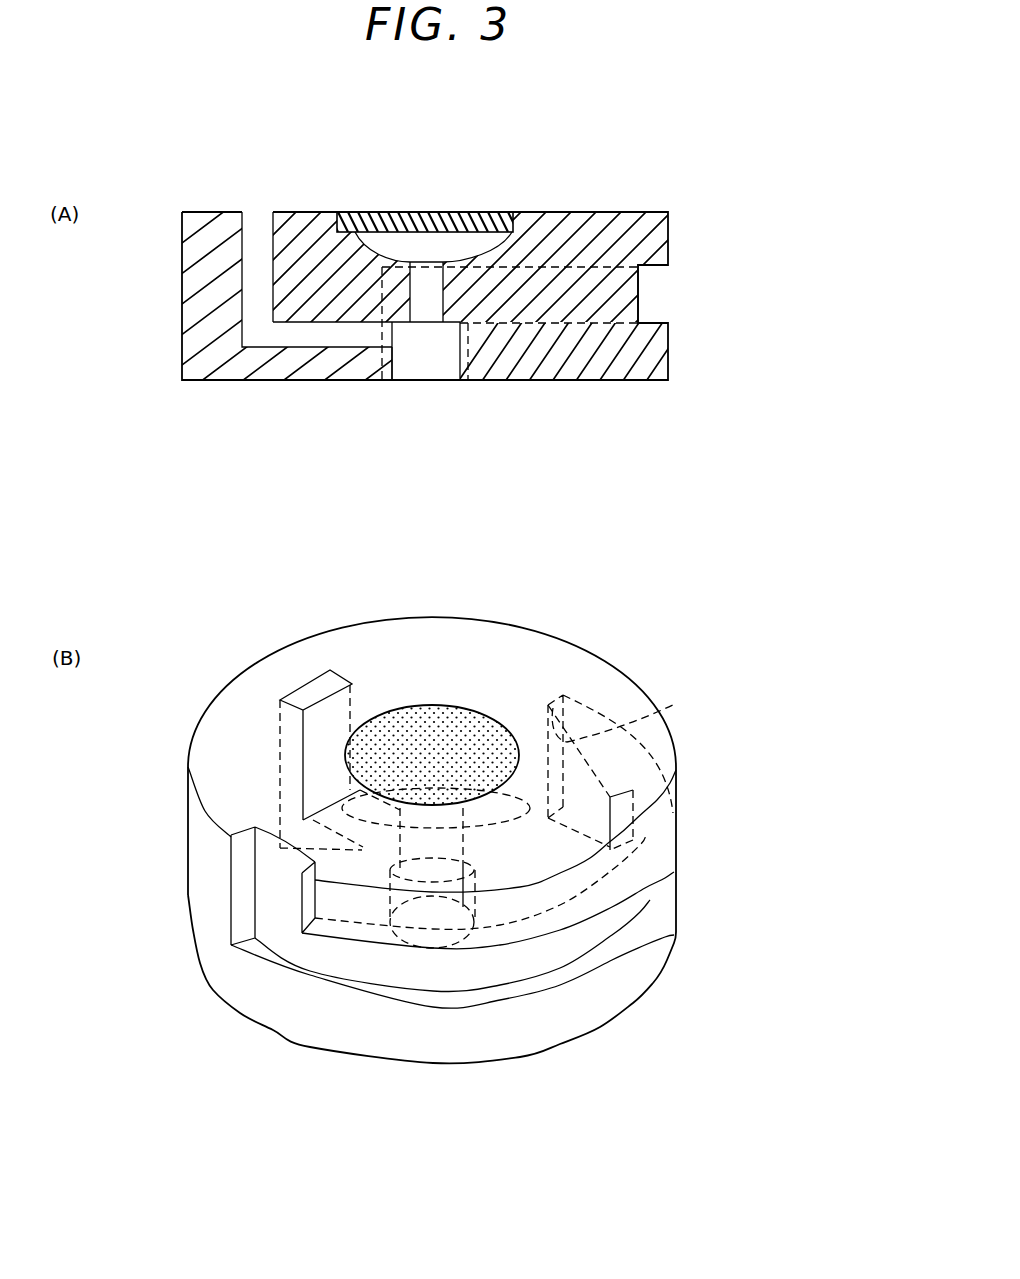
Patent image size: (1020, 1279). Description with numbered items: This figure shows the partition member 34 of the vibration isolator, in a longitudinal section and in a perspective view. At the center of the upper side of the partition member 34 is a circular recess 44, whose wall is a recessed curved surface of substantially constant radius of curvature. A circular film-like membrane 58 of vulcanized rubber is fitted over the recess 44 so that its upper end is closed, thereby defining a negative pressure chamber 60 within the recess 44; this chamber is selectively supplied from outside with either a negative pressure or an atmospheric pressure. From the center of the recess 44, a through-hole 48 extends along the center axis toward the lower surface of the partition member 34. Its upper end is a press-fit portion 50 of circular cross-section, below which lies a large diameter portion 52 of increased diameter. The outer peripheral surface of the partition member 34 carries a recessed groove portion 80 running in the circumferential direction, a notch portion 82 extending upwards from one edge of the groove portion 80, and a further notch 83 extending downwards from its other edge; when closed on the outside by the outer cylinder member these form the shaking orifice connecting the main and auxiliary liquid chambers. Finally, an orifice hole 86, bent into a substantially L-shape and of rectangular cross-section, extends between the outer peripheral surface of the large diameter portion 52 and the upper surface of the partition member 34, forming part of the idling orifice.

The partition member 34 is at (652, 125).
The circular recess 44 is at (355, 213).
The through-hole 48 is at (438, 358).
The press-fit portion 50 is at (420, 272).
The large diameter portion 52 is at (397, 362).
The membrane 58 is at (500, 210).
The negative pressure chamber 60 is at (452, 240).
The recessed groove portion 80 is at (648, 322).
The notch portion 82 is at (242, 857).
The notch 83 is at (657, 708).
The orifice hole 86 is at (250, 262).